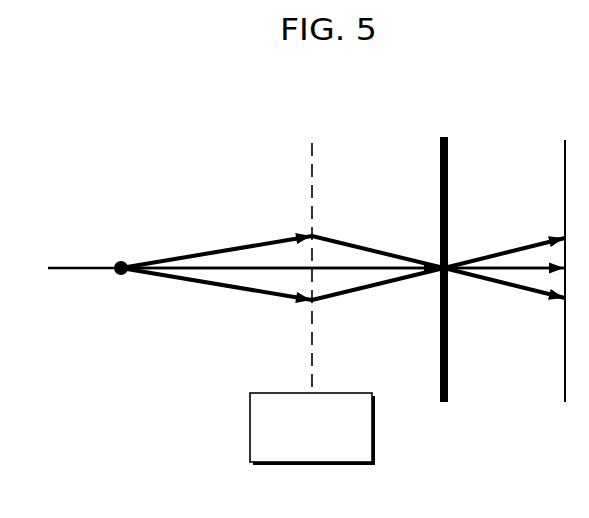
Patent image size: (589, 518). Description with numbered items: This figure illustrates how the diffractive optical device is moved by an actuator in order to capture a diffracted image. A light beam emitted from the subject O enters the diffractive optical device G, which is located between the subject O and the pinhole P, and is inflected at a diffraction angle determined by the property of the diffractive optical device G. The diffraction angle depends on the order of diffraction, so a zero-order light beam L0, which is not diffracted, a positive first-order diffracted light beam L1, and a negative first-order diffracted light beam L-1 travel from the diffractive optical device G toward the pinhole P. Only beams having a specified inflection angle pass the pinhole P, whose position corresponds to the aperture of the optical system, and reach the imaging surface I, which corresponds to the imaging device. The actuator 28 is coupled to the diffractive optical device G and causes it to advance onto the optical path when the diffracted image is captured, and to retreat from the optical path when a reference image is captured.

The actuator 28 is at (250, 412).
The subject O is at (121, 252).
The diffractive optical device G is at (312, 246).
The pinhole P is at (443, 249).
The imaging surface I is at (564, 249).
The positive first-order diffracted light beam L1 is at (345, 240).
The negative first-order diffracted light beam L-1 is at (350, 300).
The zero-order light beam L0 is at (504, 272).